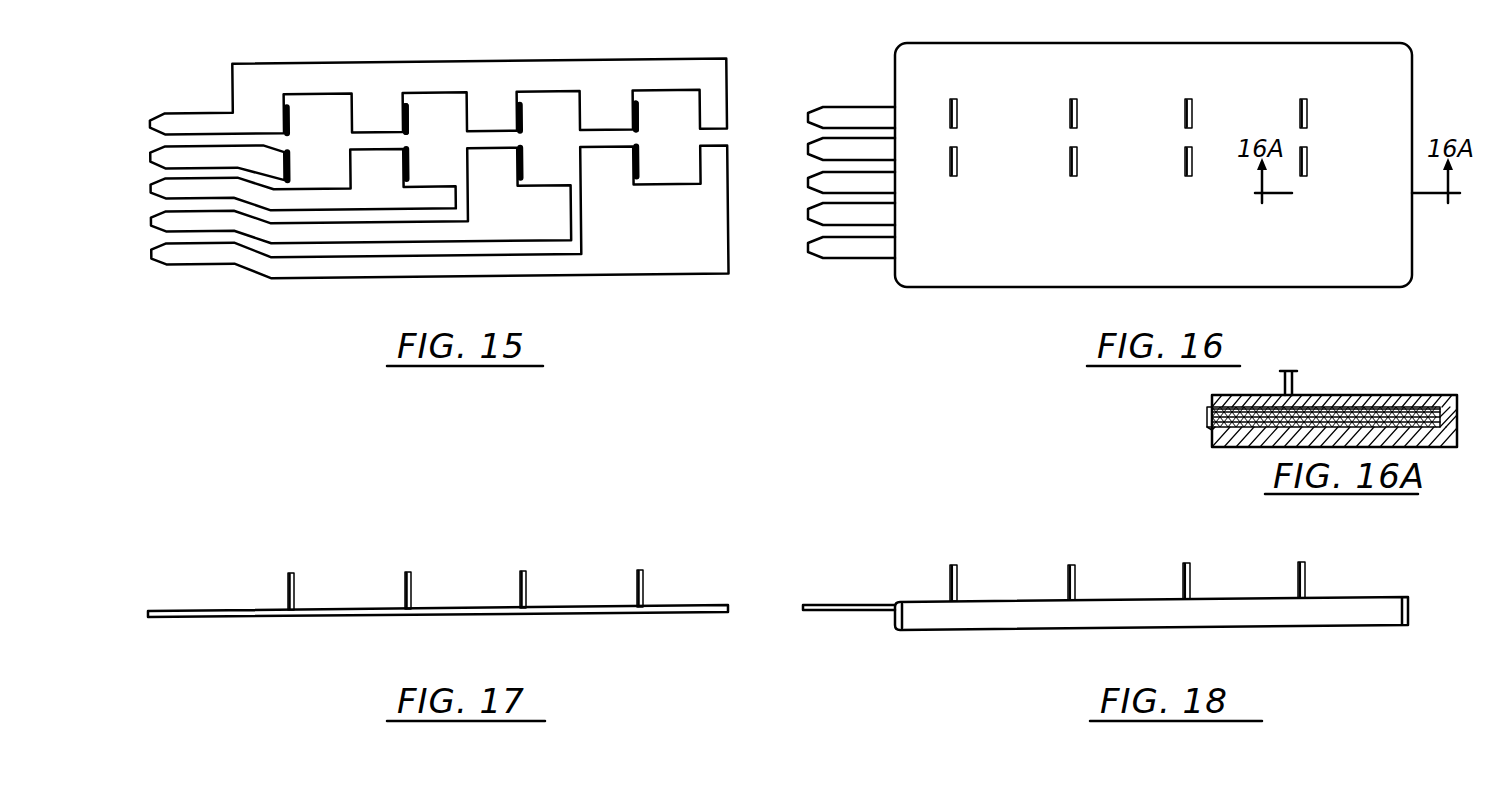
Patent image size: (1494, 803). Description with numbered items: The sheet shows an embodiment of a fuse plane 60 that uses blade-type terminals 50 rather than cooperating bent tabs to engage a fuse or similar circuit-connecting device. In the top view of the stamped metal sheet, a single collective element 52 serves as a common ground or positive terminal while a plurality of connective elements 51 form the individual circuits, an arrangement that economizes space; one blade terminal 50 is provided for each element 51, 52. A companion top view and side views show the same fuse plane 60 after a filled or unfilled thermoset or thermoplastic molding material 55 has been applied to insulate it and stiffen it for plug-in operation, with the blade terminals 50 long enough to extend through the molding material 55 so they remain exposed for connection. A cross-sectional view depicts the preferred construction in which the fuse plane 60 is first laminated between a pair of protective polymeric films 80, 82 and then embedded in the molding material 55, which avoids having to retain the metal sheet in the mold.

In FIG. 15, the blade terminal 50 is at (406, 111).
In FIG. 16, the blade terminal 50 is at (1192, 105).
In FIG. 16A, the blade terminal 50 is at (1298, 387).
In FIG. 17, the blade terminal 50 is at (413, 581).
In FIG. 18, the blade terminal 50 is at (1078, 576).
In FIG. 15, the connective element 51 is at (280, 165).
In FIG. 15, the collective element 52 is at (283, 121).
In FIG. 16, the molding material 55 is at (1000, 48).
In FIG. 16A, the molding material 55 is at (1258, 437).
In FIG. 18, the molding material 55 is at (1267, 622).
In FIG. 15, the fuse plane 60 is at (606, 63).
In FIG. 16A, the fuse plane 60 is at (1383, 418).
In FIG. 17, the fuse plane 60 is at (658, 603).
In FIG. 16A, the polymeric film 80 is at (1362, 410).
In FIG. 16A, the polymeric film 82 is at (1213, 437).